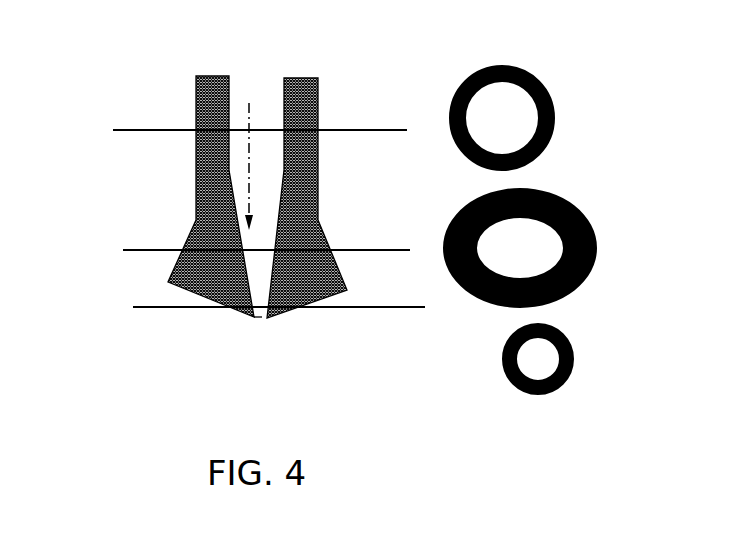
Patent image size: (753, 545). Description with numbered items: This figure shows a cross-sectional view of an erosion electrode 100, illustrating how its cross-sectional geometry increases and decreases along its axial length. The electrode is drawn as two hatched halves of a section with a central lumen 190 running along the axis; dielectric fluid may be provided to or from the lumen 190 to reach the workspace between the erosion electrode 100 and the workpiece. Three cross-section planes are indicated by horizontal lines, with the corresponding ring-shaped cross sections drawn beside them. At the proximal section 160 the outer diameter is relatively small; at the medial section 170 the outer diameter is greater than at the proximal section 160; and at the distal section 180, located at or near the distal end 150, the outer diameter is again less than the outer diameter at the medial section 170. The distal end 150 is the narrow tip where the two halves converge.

The erosion electrode 100 is at (210, 89).
The distal end 150 is at (252, 315).
The proximal section 160 is at (138, 131).
The medial section 170 is at (155, 251).
The distal section 180 is at (177, 307).
The lumen 190 is at (252, 180).